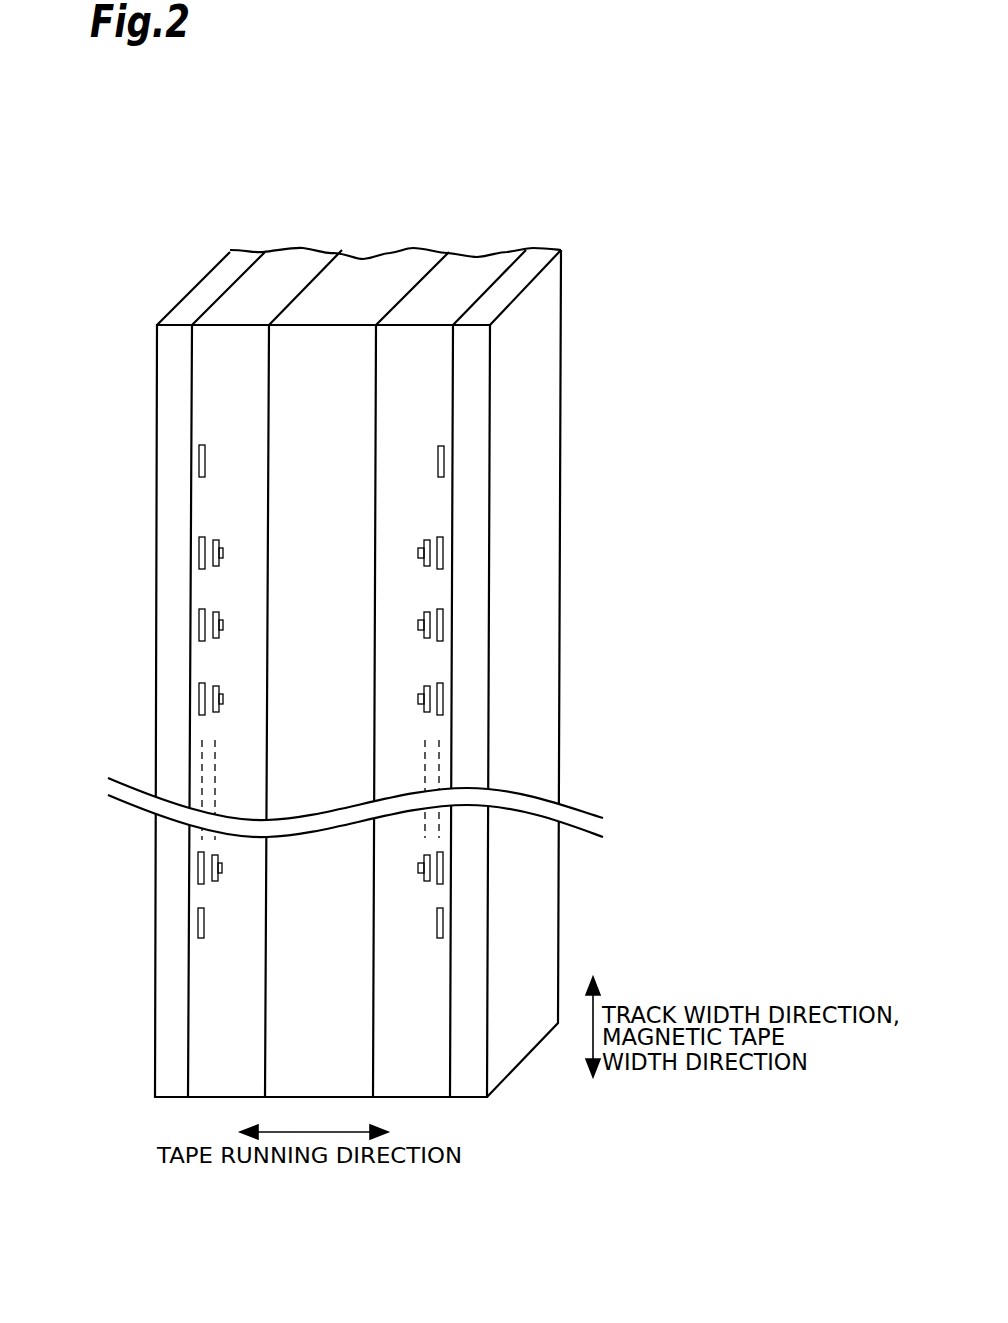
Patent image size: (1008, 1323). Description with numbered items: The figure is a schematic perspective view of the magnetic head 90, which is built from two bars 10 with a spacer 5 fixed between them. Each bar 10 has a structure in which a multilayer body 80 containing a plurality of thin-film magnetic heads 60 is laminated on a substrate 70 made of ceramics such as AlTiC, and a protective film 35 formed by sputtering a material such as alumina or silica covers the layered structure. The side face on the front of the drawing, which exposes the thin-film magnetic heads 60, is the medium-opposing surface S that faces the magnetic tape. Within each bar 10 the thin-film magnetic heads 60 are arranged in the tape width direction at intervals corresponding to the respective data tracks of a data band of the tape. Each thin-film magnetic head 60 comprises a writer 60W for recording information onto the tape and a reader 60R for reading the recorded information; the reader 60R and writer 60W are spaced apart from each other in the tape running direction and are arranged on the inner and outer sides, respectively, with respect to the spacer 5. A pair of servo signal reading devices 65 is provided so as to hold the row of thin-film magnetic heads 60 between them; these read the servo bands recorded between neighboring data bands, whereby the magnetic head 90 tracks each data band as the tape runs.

The magnetic head 90 is at (273, 116).
The bar 10 is at (338, 156).
The substrate 70 is at (237, 260).
The multilayer body 80 is at (302, 260).
The spacer 5 is at (393, 265).
The protective film 35 is at (233, 343).
The medium-opposing surface S is at (205, 372).
The servo signal reading device 65 is at (198, 460).
The thin-film magnetic head 60 is at (76, 482).
The writer 60W is at (216, 538).
The reader 60R is at (198, 542).